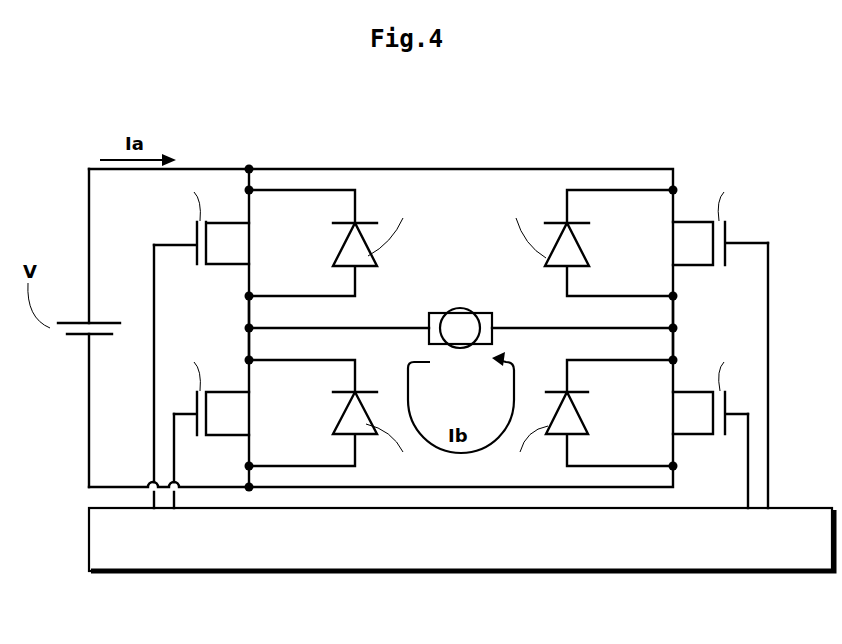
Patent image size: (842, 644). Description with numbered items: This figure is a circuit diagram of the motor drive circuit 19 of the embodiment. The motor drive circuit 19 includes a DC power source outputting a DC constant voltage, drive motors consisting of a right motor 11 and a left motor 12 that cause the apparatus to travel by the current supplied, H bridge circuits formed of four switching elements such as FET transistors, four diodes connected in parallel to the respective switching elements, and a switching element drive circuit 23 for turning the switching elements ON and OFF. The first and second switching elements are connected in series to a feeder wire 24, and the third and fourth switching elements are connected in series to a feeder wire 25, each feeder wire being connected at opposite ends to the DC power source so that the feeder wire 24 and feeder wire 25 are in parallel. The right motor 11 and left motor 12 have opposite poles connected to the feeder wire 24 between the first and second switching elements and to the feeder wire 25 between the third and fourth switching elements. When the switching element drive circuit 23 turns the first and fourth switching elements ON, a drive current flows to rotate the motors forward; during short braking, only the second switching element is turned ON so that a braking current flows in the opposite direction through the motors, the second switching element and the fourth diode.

The motor drive circuit 19 is at (434, 157).
The feeder wire 24 is at (247, 320).
The feeder wire 25 is at (675, 320).
The right motor 11 is at (454, 299).
The left motor 12 is at (460, 308).
The switching element drive circuit 23 is at (798, 567).